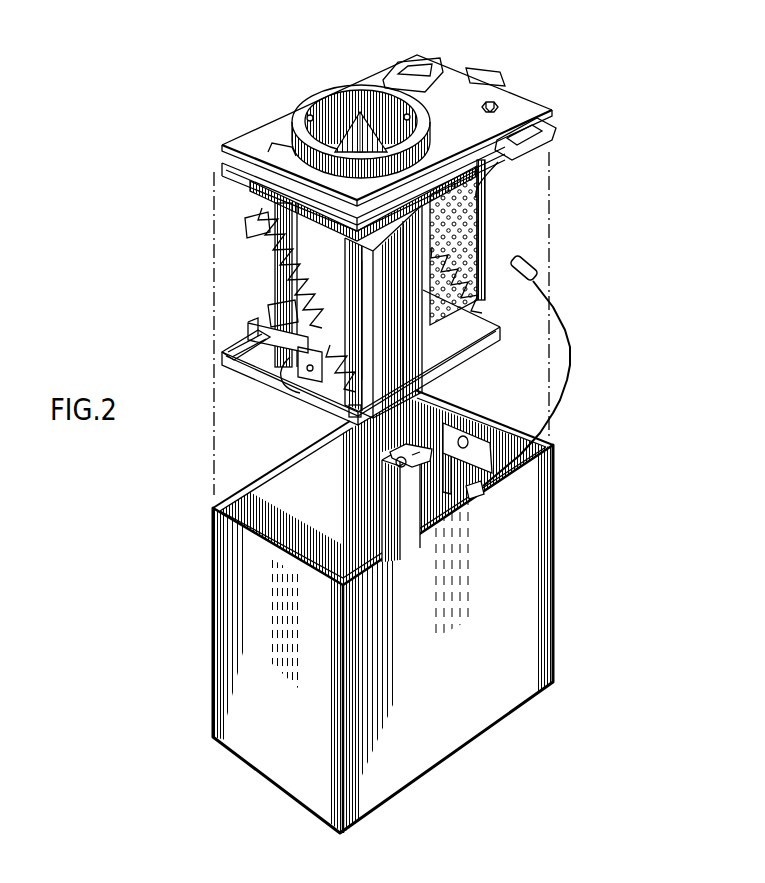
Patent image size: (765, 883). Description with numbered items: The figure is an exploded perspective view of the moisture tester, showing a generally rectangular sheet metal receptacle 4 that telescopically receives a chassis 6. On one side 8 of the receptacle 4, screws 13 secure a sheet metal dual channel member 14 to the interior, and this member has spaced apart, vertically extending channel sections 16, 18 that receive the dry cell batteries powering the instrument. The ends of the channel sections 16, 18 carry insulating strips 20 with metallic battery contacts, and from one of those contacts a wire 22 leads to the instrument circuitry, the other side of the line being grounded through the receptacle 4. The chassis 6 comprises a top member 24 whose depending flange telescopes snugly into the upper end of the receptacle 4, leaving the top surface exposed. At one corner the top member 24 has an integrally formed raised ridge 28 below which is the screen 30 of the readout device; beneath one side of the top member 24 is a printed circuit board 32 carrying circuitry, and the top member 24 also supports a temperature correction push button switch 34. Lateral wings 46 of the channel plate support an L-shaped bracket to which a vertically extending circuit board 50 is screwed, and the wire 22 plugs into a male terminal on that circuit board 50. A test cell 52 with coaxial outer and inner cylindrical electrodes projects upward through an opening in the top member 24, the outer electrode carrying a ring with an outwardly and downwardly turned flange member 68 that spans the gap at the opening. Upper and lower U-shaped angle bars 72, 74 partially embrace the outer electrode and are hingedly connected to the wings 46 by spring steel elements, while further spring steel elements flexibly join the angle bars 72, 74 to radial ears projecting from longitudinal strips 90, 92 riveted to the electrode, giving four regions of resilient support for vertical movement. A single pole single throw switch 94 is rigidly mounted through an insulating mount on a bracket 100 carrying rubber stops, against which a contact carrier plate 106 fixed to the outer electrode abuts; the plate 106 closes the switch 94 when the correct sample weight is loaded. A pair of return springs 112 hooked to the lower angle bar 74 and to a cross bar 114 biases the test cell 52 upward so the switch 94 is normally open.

The receptacle 4 is at (556, 538).
The chassis 6 is at (533, 96).
The side 8 is at (468, 406).
The screws 13 is at (487, 430).
The dual channel member 14 is at (455, 520).
The channel section 16 is at (385, 495).
The channel section 18 is at (476, 493).
The insulating strips 20 is at (392, 452).
The wire 22 is at (560, 303).
The top member 24 is at (255, 138).
The raised ridge 28 is at (404, 62).
The screen 30 is at (430, 70).
The printed circuit board 32 is at (556, 130).
The temperature correction push button switch 34 is at (490, 104).
The lateral wings 46 is at (280, 280).
The circuit board 50 is at (481, 227).
The test cell 52 is at (326, 92).
The flange member 68 is at (308, 115).
The upper angle bar 72 is at (372, 292).
The lower angle bar 74 is at (222, 358).
The longitudinal strip 90 is at (360, 330).
The longitudinal strip 92 is at (420, 330).
The switch 94 is at (299, 320).
The bracket 100 is at (255, 365).
The contact carrier plate 106 is at (312, 378).
The return springs 112 is at (280, 250).
The cross bar 114 is at (250, 224).